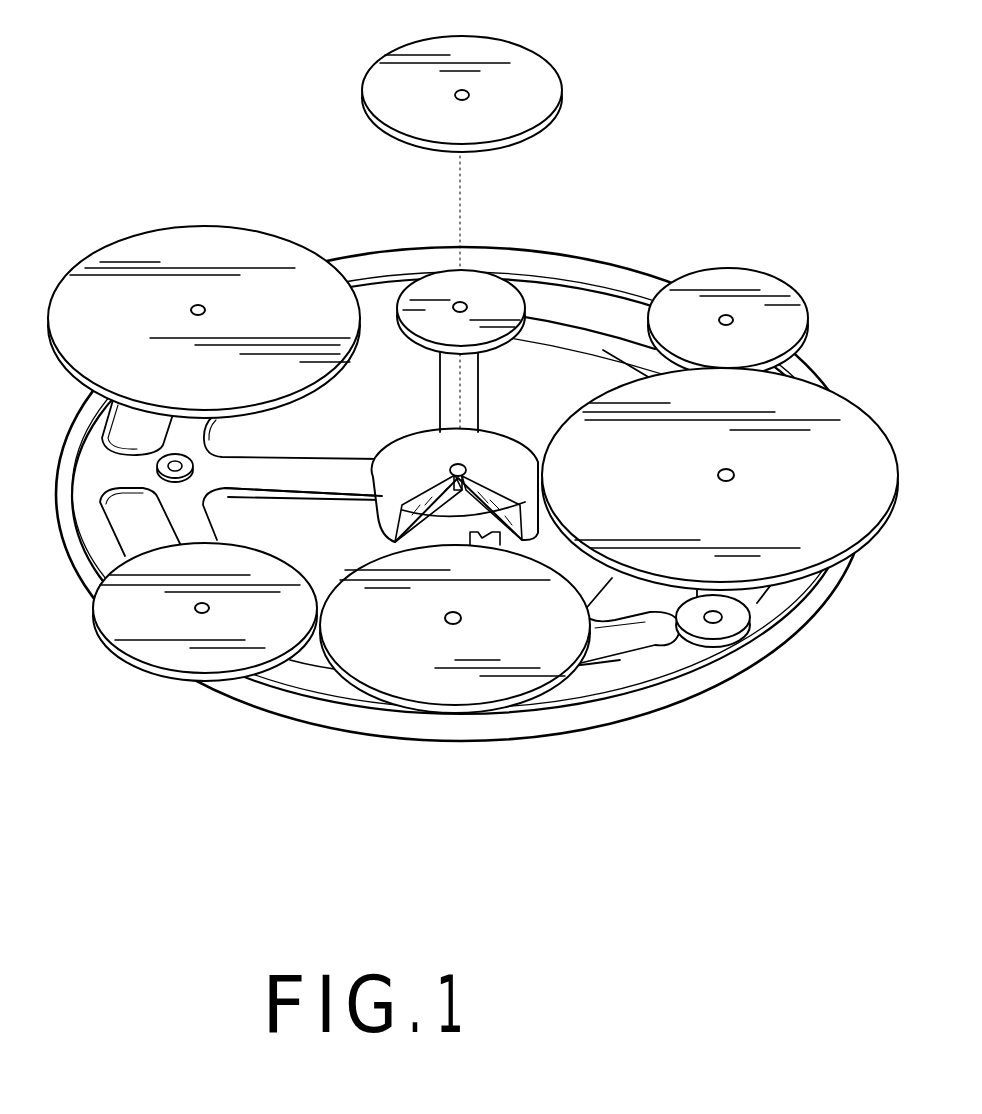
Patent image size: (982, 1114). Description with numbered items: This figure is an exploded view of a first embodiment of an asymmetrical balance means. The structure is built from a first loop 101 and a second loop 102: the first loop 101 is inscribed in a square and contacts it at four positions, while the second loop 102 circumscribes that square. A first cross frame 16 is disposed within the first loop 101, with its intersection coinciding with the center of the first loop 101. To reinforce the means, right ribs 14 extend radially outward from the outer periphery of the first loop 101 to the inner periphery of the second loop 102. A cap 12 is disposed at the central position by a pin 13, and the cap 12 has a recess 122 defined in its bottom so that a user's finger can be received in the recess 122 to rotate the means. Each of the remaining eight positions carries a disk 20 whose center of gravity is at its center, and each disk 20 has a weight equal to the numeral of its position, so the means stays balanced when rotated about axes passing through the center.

The disk 20 is at (545, 70).
The second loop 102 is at (530, 258).
The first loop 101 is at (596, 340).
The cap 12 is at (494, 458).
The pin 13 is at (406, 445).
The recess 122 is at (545, 495).
The first cross frame 16 is at (292, 478).
The right ribs 14 is at (662, 640).